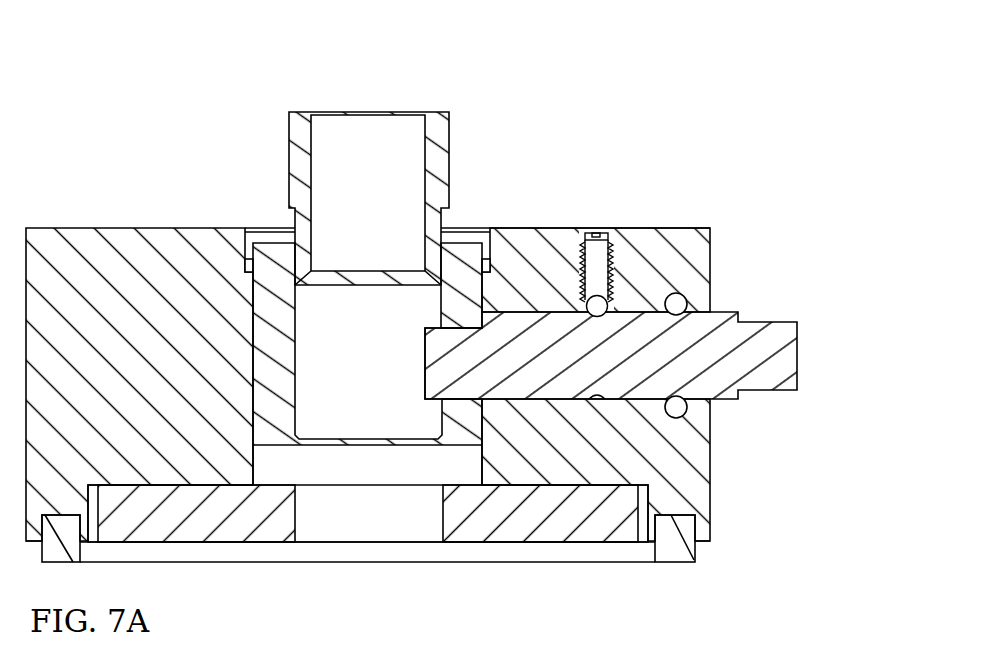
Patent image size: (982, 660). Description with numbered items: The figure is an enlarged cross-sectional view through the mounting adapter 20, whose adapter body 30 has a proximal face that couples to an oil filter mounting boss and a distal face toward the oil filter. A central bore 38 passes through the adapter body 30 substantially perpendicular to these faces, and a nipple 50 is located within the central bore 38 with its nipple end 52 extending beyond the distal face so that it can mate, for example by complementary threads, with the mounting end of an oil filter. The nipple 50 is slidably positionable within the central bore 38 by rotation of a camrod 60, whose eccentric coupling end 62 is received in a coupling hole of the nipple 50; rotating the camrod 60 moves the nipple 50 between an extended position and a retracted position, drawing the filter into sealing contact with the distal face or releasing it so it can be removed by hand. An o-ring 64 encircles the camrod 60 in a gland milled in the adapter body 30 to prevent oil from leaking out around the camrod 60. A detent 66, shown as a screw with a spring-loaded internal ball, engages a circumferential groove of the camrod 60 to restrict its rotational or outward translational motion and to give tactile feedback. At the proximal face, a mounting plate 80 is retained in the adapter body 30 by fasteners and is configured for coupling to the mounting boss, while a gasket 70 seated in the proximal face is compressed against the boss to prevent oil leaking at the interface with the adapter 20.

The mounting adapter 20 is at (117, 73).
The adapter body 30 is at (710, 268).
The central bore 38 is at (274, 467).
The nipple 50 is at (403, 236).
The nipple end 52 is at (382, 103).
The camrod 60 is at (601, 332).
The eccentric coupling end 62 is at (425, 357).
The o-ring 64 is at (681, 290).
The detent 66 is at (598, 233).
The gasket 70 is at (669, 549).
The mounting plate 80 is at (550, 530).